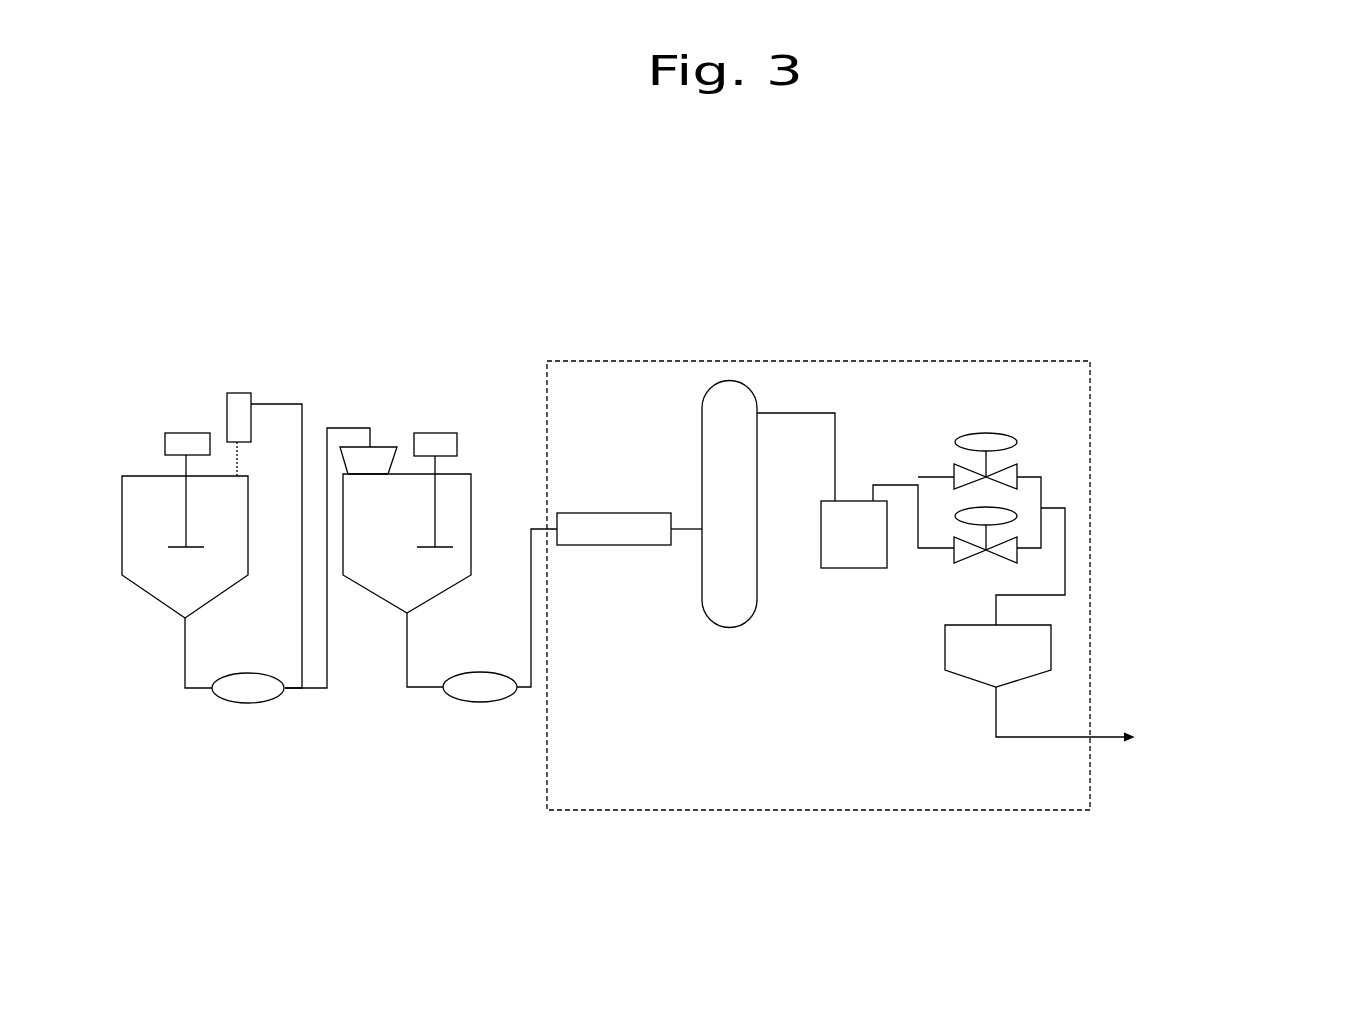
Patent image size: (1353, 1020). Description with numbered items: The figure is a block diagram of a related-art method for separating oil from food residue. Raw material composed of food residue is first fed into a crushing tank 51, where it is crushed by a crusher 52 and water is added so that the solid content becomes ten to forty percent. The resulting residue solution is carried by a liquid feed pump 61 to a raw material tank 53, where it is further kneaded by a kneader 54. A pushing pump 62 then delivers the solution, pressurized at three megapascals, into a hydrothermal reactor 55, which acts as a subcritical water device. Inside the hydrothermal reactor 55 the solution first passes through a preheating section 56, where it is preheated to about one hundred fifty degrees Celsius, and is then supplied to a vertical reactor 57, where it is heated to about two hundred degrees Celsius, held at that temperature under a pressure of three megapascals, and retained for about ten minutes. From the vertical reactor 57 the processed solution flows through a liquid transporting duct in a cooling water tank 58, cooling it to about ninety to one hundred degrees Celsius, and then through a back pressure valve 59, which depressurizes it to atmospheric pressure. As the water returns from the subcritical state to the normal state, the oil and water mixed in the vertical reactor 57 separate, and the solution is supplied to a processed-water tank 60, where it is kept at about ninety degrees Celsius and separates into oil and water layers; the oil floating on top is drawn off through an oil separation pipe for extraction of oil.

The crushing tank 51 is at (122, 490).
The crusher 52 is at (186, 433).
The raw material tank 53 is at (472, 493).
The kneader 54 is at (435, 433).
The hydrothermal reactor 55 is at (664, 361).
The preheating section 56 is at (618, 513).
The vertical reactor 57 is at (757, 470).
The cooling water tank 58 is at (855, 568).
The back pressure valve 59 is at (954, 465).
The processed-water tank 60 is at (1051, 648).
The liquid feed pump 61 is at (250, 703).
The pushing pump 62 is at (480, 702).